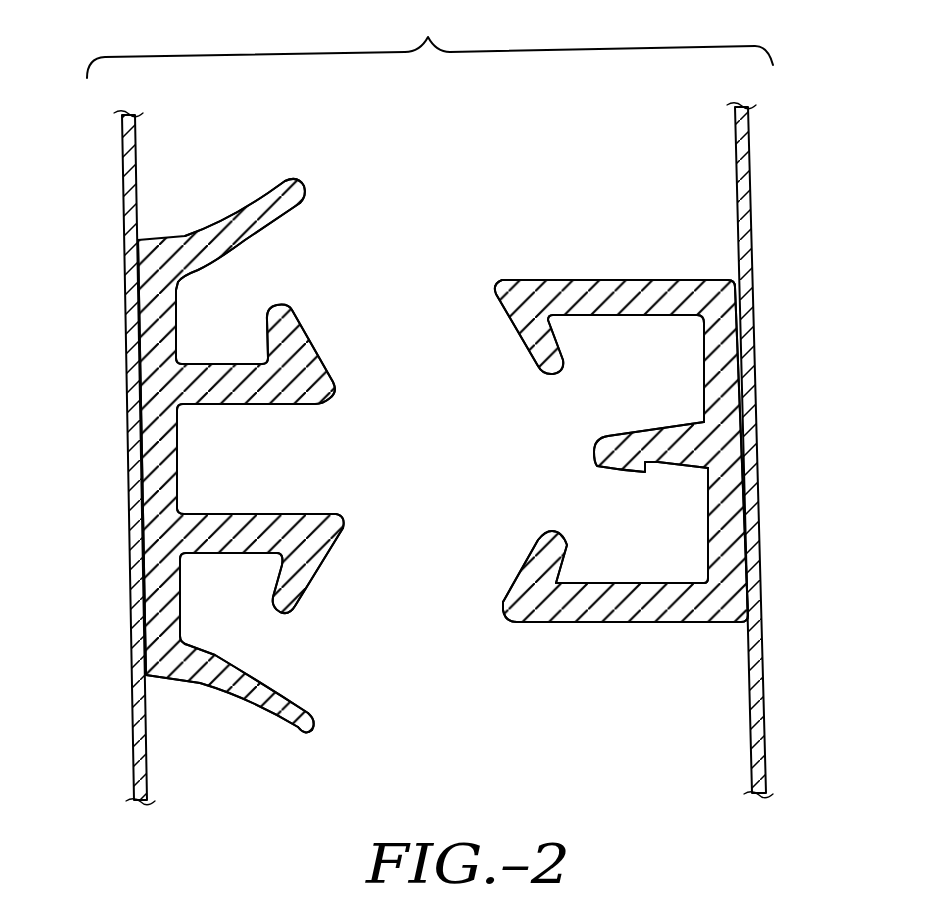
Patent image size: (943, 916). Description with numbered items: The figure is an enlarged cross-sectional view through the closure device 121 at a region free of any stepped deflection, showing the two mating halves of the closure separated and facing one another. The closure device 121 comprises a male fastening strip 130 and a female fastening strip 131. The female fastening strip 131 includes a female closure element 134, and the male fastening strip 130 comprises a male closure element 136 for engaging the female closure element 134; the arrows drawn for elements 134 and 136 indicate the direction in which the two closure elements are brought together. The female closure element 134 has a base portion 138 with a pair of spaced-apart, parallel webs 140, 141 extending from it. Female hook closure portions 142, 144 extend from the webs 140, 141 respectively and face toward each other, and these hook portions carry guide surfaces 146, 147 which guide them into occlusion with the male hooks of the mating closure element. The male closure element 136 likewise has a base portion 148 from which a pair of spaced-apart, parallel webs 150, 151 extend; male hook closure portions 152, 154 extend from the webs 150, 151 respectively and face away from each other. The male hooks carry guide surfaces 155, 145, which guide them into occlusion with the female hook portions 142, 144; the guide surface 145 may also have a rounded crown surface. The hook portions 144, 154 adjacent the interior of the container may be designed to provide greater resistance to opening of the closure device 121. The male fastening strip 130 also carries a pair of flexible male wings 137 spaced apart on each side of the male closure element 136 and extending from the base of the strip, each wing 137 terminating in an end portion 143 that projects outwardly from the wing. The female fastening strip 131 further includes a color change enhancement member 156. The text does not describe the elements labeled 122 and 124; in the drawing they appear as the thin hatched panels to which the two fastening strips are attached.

The closure device 121 is at (430, 41).
The panel lower portion 122 is at (137, 688).
The panel 124 is at (123, 234).
The male fastening strip 130 is at (350, 218).
The female fastening strip 131 is at (533, 222).
The female closure element 134 is at (552, 455).
The male closure element 136 is at (322, 455).
The male wings 137 is at (188, 228).
The base portion 138 is at (732, 425).
The web 140 is at (631, 278).
The web 141 is at (617, 624).
The female hook closure portion 142 is at (517, 311).
The end portion 143 is at (292, 180).
The female hook closure portion 144 is at (533, 550).
The guide surface 145 is at (306, 597).
The guide surface 146 is at (530, 364).
The guide surface 147 is at (505, 594).
The base portion 148 is at (157, 522).
The web 150 is at (233, 360).
The web 151 is at (237, 555).
The male hook closure portion 152 is at (332, 398).
The male hook closure portion 154 is at (325, 518).
The guide surface 155 is at (312, 340).
The color change enhancement member 156 is at (592, 452).